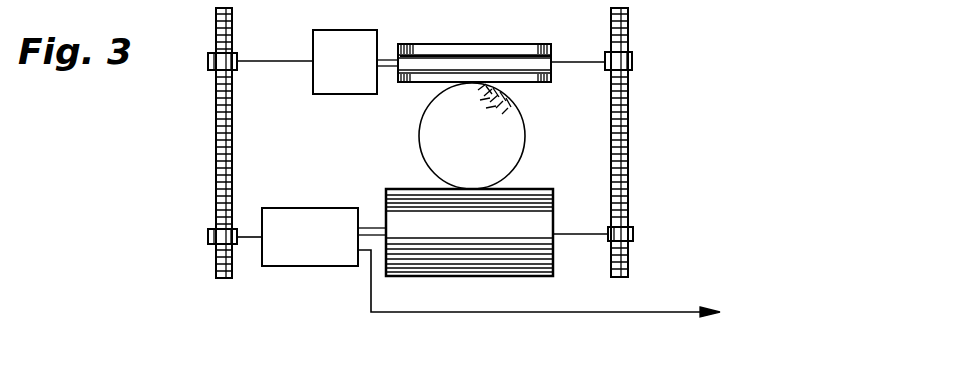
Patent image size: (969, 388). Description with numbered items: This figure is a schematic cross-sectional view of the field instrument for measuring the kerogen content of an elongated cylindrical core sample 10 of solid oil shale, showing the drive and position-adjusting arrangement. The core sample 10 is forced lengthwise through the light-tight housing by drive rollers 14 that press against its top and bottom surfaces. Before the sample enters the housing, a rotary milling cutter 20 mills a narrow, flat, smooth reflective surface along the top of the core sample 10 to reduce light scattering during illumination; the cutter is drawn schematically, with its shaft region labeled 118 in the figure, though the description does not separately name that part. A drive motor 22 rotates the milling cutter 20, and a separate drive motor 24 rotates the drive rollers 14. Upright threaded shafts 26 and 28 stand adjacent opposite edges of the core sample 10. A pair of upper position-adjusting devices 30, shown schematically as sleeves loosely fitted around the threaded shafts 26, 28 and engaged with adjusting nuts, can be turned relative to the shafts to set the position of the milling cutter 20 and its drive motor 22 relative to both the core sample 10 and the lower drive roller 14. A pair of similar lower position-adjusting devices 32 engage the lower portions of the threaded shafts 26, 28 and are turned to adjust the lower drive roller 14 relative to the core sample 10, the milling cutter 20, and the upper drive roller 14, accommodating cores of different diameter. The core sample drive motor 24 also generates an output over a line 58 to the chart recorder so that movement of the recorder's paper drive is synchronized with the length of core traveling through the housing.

The core sample 10 is at (518, 150).
The drive rollers 14 is at (539, 280).
The rotary milling cutter 20 is at (512, 67).
The roller shaft 118 is at (472, 76).
The drive motor 22 is at (357, 47).
The drive motor 24 is at (297, 228).
The upright threaded shaft 26 is at (217, 172).
The upright threaded shaft 28 is at (627, 118).
The upper position-adjusting devices 30 is at (208, 61).
The lower position-adjusting devices 32 is at (210, 240).
The line 58 is at (622, 312).